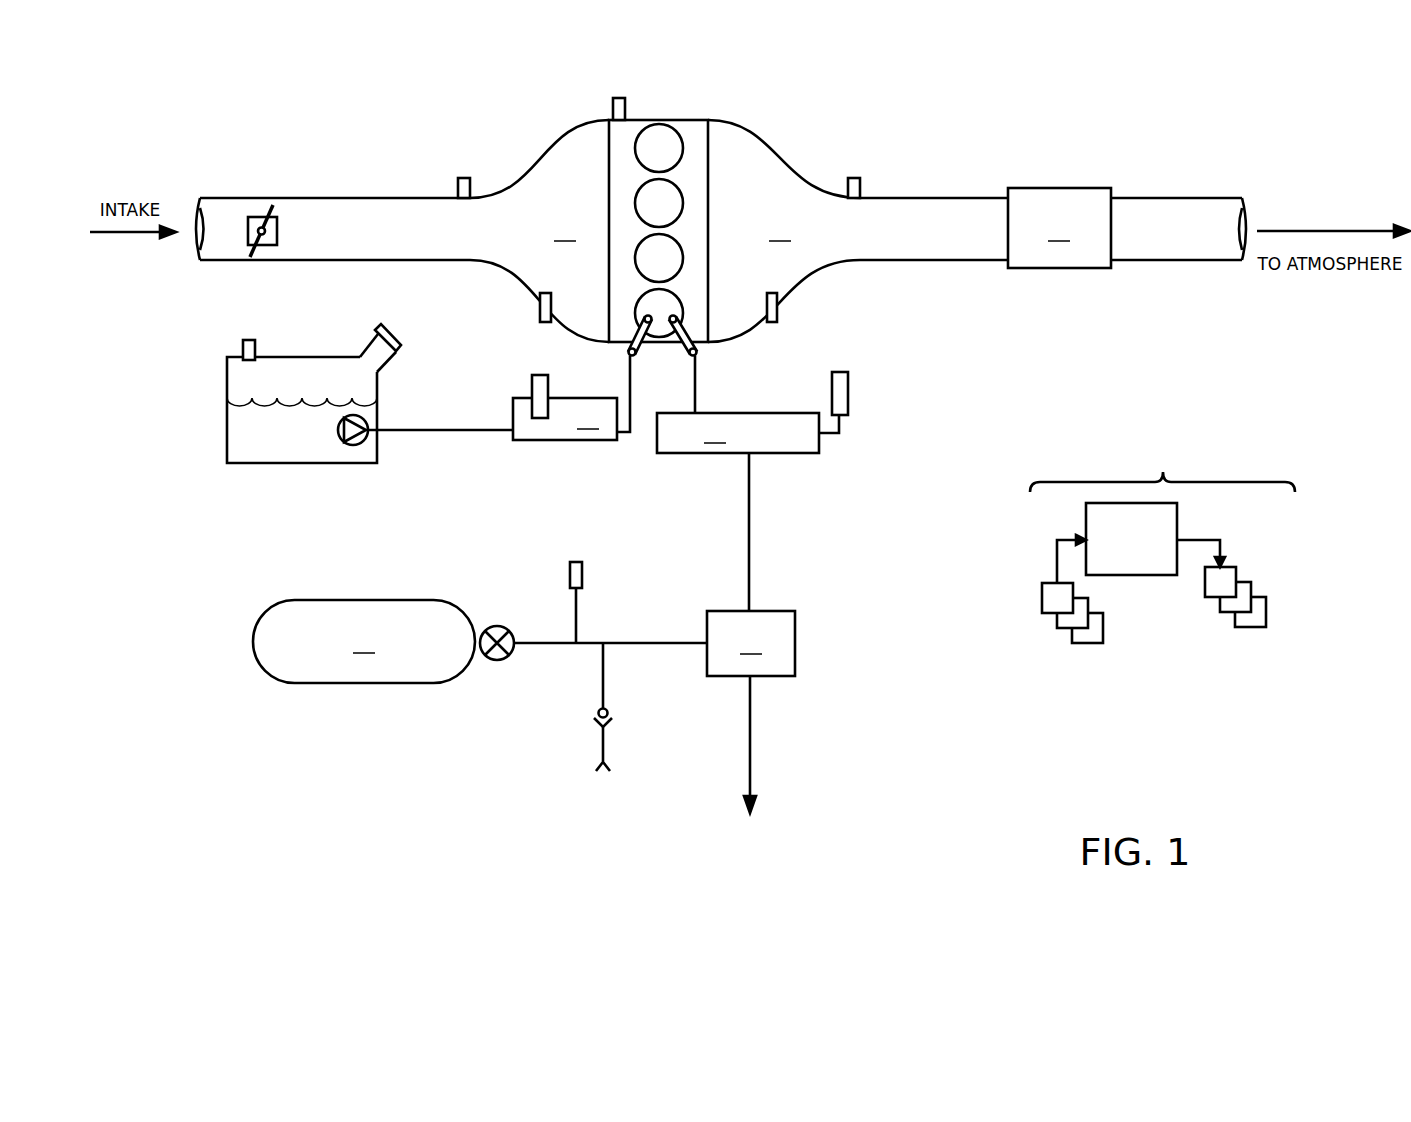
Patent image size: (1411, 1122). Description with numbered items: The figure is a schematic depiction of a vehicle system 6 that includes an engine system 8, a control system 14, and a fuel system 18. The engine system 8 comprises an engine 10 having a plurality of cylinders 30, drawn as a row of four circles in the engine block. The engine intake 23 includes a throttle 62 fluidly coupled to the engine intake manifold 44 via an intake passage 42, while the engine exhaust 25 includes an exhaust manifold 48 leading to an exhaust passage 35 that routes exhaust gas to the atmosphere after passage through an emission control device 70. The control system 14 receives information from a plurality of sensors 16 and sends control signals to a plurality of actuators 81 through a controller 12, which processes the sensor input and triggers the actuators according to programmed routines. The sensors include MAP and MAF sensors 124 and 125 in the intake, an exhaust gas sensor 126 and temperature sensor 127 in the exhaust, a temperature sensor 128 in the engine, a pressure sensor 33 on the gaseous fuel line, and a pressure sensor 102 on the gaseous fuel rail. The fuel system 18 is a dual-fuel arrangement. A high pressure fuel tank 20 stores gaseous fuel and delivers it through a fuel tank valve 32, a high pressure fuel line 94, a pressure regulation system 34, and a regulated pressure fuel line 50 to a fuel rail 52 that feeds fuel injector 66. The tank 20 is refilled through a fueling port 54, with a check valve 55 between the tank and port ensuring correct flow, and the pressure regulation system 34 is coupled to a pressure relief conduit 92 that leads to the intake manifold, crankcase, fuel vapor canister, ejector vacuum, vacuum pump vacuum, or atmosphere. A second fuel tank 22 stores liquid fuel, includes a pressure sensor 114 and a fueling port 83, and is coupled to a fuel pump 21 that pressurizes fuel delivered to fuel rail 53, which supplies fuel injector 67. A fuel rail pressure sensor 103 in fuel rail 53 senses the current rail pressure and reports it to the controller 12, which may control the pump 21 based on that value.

The vehicle system 6 is at (289, 118).
The engine system 8 is at (838, 80).
The engine 10 is at (708, 210).
The controller 12 is at (1131, 539).
The control system 14 is at (1162, 568).
The sensors 16 is at (1030, 650).
The fuel system 18 is at (485, 744).
The high pressure fuel tank 20 is at (364, 641).
The fuel pump 21 is at (338, 427).
The fuel tank 22 is at (227, 432).
The engine intake 23 is at (410, 178).
The engine exhaust 25 is at (1071, 134).
The cylinders 30 is at (683, 143).
The fuel tank valve 32 is at (504, 631).
The pressure sensor 33 is at (581, 562).
The pressure regulation system 34 is at (751, 643).
The exhaust passage 35 is at (1190, 198).
The intake passage 42 is at (315, 262).
The engine intake manifold 44 is at (565, 230).
The exhaust manifold 48 is at (780, 230).
The regulated pressure fuel line 50 is at (749, 527).
The fuel rail 52 is at (781, 412).
The fuel rail 53 is at (565, 390).
The fueling port 54 is at (601, 768).
The check valve 55 is at (598, 706).
The throttle 62 is at (277, 231).
The fuel injector 66 is at (697, 357).
The fuel injector 67 is at (628, 357).
The emission control device 70 is at (1059, 228).
The actuators 81 is at (1193, 634).
The fueling port 83 is at (384, 338).
The pressure relief conduit 92 is at (751, 713).
The high pressure fuel line 94 is at (657, 642).
The pressure sensor 102 is at (850, 404).
The fuel rail pressure sensor 103 is at (541, 375).
The pressure sensor 114 is at (243, 344).
The MAP sensor 124 is at (469, 190).
The MAF sensor 125 is at (541, 305).
The exhaust gas sensor 126 is at (778, 316).
The temperature sensor 127 is at (849, 190).
The temperature sensor 128 is at (623, 109).